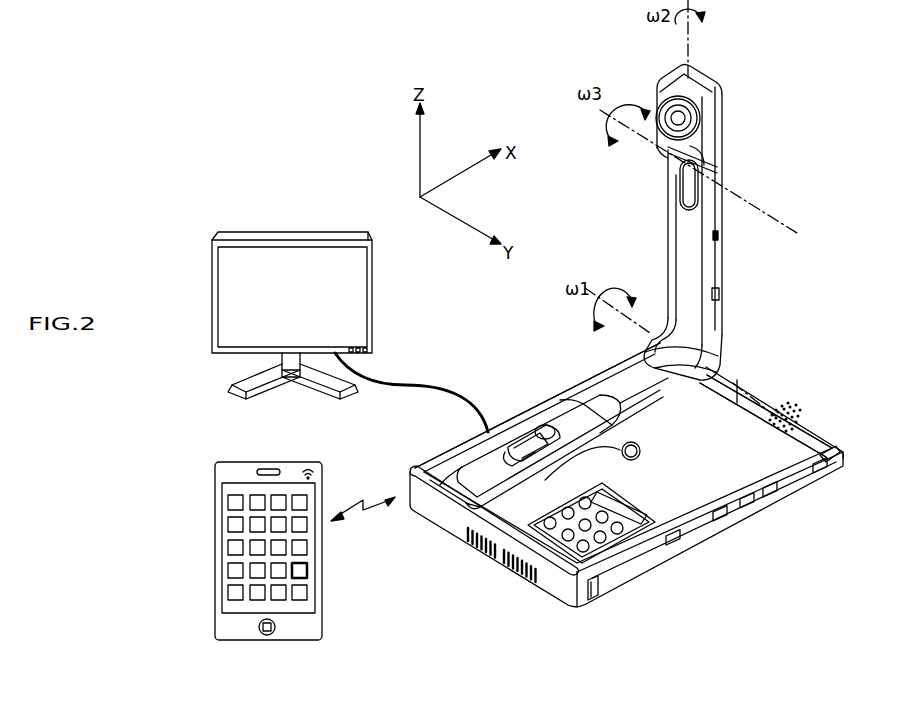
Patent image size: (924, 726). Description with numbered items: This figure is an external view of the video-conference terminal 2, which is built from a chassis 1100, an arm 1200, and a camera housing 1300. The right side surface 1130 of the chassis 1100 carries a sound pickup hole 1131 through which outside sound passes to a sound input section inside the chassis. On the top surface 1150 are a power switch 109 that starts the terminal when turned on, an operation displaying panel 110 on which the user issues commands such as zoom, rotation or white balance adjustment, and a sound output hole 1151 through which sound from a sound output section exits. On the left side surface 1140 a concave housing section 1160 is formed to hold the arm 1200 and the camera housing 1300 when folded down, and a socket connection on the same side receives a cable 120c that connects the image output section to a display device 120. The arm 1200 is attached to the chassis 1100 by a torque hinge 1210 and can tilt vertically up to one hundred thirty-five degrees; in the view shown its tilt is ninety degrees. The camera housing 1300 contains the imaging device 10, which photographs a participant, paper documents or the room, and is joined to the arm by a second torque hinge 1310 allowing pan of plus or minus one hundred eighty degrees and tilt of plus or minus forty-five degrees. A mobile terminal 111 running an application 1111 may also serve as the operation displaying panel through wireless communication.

The video-conference terminal 2 is at (766, 153).
The imaging device 10 is at (643, 108).
The power switch 109 is at (478, 546).
The operation displaying panel 110 is at (630, 527).
The mobile terminal 111 is at (325, 629).
The application 1111 is at (308, 571).
The display device 120 is at (372, 287).
The cable 120c is at (387, 383).
The chassis 1100 is at (436, 445).
The right side surface 1130 is at (600, 592).
The sound pickup hole 1131 is at (838, 453).
The left side surface 1140 is at (600, 365).
The top surface 1150 is at (737, 393).
The sound output hole 1151 is at (800, 428).
The housing section 1160 is at (555, 396).
The arm 1200 is at (723, 265).
The torque hinge 1210 is at (712, 348).
The camera housing 1300 is at (718, 125).
The torque hinge 1310 is at (680, 182).